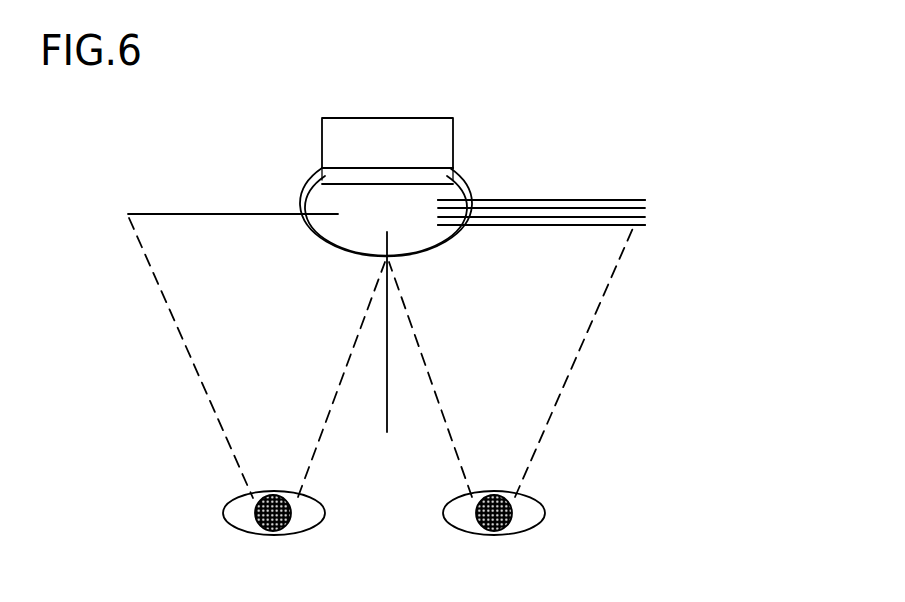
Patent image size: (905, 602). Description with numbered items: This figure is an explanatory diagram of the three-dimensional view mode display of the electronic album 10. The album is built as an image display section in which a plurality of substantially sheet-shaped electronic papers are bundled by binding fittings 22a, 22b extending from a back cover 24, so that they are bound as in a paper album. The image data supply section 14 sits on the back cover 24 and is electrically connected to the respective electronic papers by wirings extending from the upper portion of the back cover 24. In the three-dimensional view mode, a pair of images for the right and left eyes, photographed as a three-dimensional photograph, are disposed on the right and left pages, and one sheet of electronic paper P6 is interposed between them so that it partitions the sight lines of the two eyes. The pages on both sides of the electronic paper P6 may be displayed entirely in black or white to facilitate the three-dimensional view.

The image display apparatus 10 is at (477, 143).
The image data supply section 14 is at (390, 127).
The back cover 24 is at (328, 177).
The binding fitting 22a is at (463, 186).
The binding fitting 22b is at (541, 212).
The electronic paper P6 is at (387, 410).